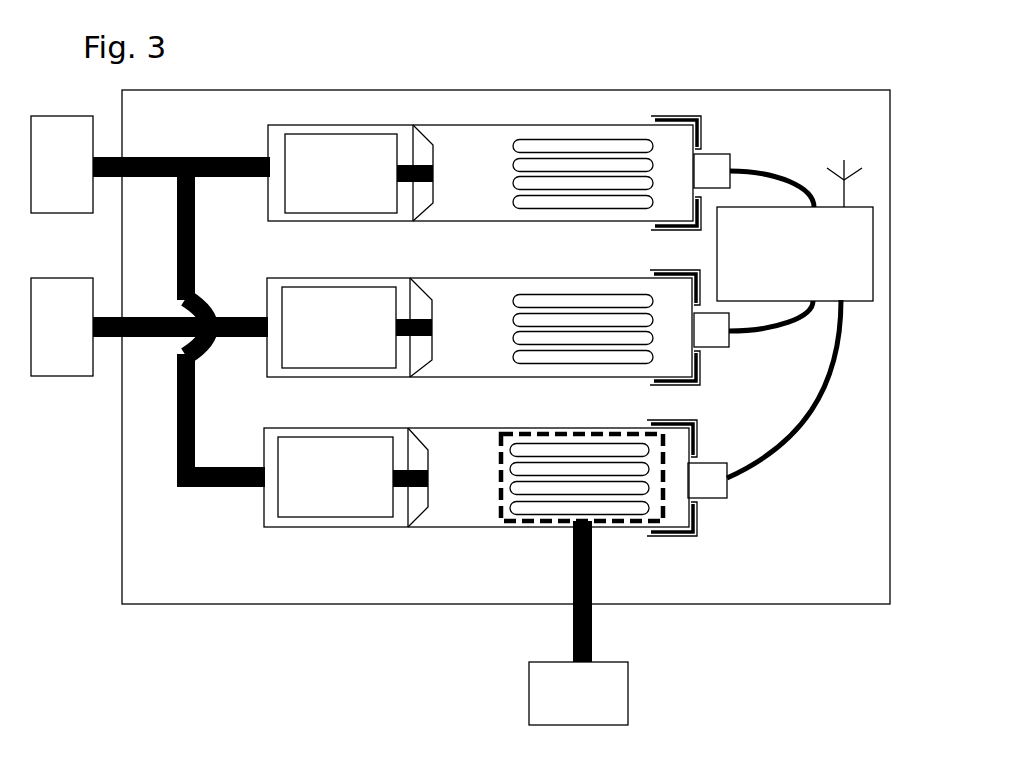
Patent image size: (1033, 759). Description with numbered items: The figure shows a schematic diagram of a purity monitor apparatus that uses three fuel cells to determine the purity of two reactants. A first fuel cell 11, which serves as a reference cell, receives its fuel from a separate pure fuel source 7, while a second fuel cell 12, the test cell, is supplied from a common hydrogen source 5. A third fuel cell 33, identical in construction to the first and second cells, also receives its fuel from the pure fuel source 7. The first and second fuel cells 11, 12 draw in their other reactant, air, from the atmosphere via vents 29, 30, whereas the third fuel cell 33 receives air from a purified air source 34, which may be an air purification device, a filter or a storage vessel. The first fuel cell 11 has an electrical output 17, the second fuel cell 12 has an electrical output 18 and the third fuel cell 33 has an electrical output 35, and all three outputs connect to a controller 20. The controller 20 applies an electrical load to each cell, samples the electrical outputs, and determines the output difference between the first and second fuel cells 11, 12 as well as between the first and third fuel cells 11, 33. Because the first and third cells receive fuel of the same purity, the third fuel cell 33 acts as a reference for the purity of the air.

The hydrogen source 5 is at (54, 338).
The pure fuel source 7 is at (54, 177).
The first fuel cell 11 is at (484, 159).
The second fuel cell 12 is at (483, 325).
The electrical output 17 is at (710, 165).
The electrical output 18 is at (710, 327).
The controller 20 is at (845, 291).
The vent 29 is at (583, 147).
The vent 30 is at (600, 303).
The third fuel cell 33 is at (473, 496).
The purified air source 34 is at (578, 623).
The electrical output 35 is at (712, 483).